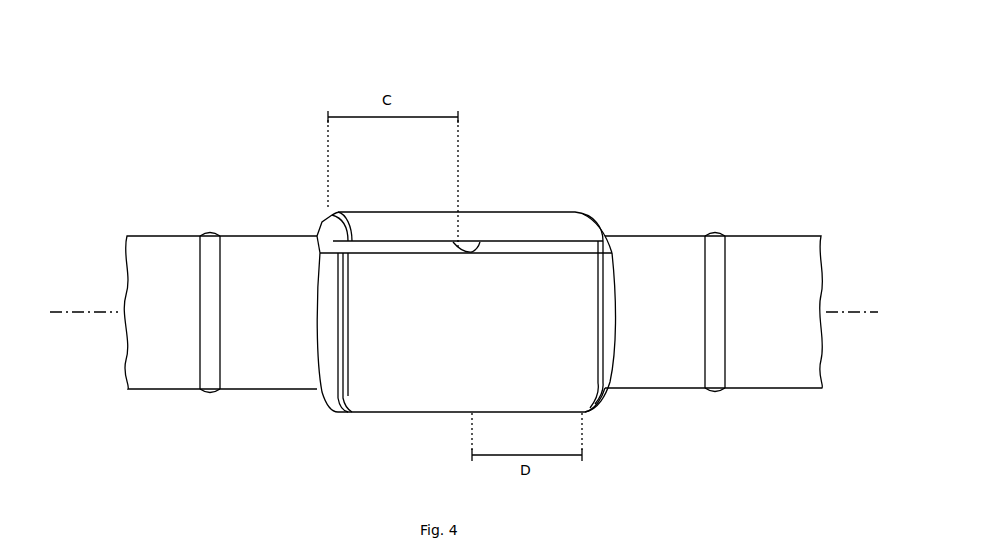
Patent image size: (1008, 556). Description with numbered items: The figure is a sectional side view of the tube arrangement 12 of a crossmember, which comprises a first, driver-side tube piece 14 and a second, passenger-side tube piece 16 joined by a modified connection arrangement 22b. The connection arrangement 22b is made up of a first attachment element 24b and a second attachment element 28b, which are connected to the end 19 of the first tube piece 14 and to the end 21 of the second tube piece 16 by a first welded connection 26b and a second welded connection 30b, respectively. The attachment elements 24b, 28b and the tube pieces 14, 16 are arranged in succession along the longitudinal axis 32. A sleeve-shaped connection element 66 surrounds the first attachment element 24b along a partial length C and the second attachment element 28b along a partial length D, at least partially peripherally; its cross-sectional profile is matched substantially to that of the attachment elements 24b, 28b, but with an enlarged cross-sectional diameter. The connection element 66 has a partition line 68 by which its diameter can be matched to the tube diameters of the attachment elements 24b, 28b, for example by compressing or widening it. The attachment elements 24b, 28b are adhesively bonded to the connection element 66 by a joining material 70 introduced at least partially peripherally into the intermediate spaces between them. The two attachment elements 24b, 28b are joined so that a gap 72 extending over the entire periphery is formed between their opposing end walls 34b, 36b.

The tube arrangement 12 is at (529, 98).
The first tube piece 14 is at (162, 248).
The second tube piece 16 is at (781, 248).
The end of the first tube piece 19 is at (136, 391).
The end of the second tube piece 21 is at (748, 230).
The connection arrangement 22b is at (466, 245).
The first attachment element 24b is at (268, 248).
The first welded connection 26b is at (205, 392).
The second attachment element 28b is at (654, 248).
The second welded connection 30b is at (715, 384).
The longitudinal axis 32 is at (100, 310).
The end wall of the first attachment element 34b is at (455, 243).
The end wall of the second attachment element 36b is at (478, 250).
The sleeve-shaped connection element 66 is at (519, 232).
The partition line 68 is at (560, 240).
The joining material 70 is at (327, 392).
The gap 72 is at (456, 247).